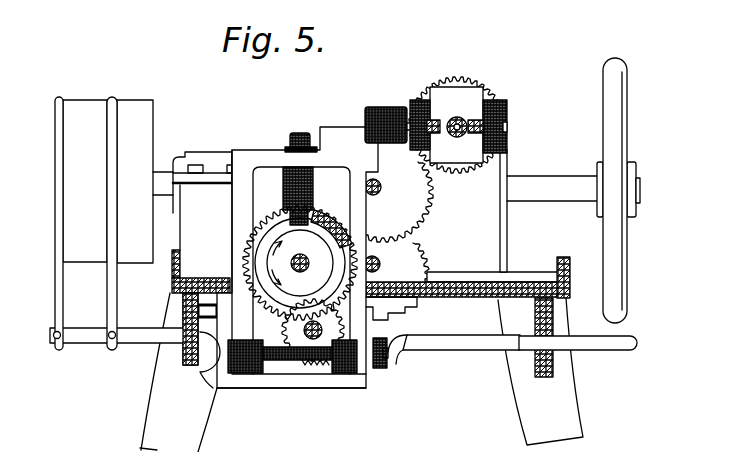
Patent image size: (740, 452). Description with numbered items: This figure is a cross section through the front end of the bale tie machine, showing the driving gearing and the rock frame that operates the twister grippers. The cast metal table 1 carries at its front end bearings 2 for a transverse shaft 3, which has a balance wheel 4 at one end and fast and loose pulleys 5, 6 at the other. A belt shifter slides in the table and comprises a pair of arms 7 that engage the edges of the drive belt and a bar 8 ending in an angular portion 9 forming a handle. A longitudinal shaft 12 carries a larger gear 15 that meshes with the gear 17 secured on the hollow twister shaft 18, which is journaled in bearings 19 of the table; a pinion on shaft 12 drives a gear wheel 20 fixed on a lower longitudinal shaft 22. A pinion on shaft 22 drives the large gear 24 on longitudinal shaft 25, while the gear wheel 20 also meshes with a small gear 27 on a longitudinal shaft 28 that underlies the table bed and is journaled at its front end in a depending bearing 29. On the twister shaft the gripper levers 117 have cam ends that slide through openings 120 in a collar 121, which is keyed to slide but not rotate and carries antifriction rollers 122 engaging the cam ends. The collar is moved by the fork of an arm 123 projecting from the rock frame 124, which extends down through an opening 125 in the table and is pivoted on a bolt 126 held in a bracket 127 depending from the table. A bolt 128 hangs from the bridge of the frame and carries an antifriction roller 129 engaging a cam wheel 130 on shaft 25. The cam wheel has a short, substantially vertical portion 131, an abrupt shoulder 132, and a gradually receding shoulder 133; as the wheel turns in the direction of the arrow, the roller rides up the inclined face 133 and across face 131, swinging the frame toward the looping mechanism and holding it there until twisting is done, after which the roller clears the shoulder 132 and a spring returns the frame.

The table 1 is at (518, 405).
The bearings 2 is at (212, 165).
The transverse shaft 3 is at (562, 184).
The balance wheel 4 is at (622, 128).
The fast pulley 5 is at (135, 168).
The loose pulley 6 is at (85, 167).
The arms 7 is at (107, 292).
The bar 8 is at (140, 343).
The angular portion 9 is at (640, 344).
The longitudinal shaft 12 is at (382, 187).
The larger gear 15 is at (418, 200).
The gear 17 is at (461, 78).
The twister shaft 18 is at (462, 123).
The bearings 19 is at (507, 222).
The gear wheel 20 is at (418, 242).
The longitudinal shaft 22 is at (381, 263).
The large gear 24 is at (268, 231).
The longitudinal shaft 25 is at (291, 263).
The small gear 27 is at (327, 345).
The longitudinal shaft 28 is at (293, 348).
The bearing 29 is at (277, 340).
The gripper levers 117 is at (433, 120).
The openings 120 is at (482, 136).
The collar 121 is at (465, 101).
The antifriction rollers 122 is at (472, 147).
The arm 123 is at (390, 107).
The rock frame 124 is at (248, 152).
The opening 125 is at (215, 352).
The bolt 126 is at (390, 360).
The bracket 127 is at (364, 390).
The bolt 128 is at (302, 133).
The antifriction roller 129 is at (288, 213).
The cam wheel 130 is at (298, 248).
The vertical portion 131 is at (302, 284).
The abrupt shoulder 132 is at (388, 318).
The receding shoulder 133 is at (330, 222).